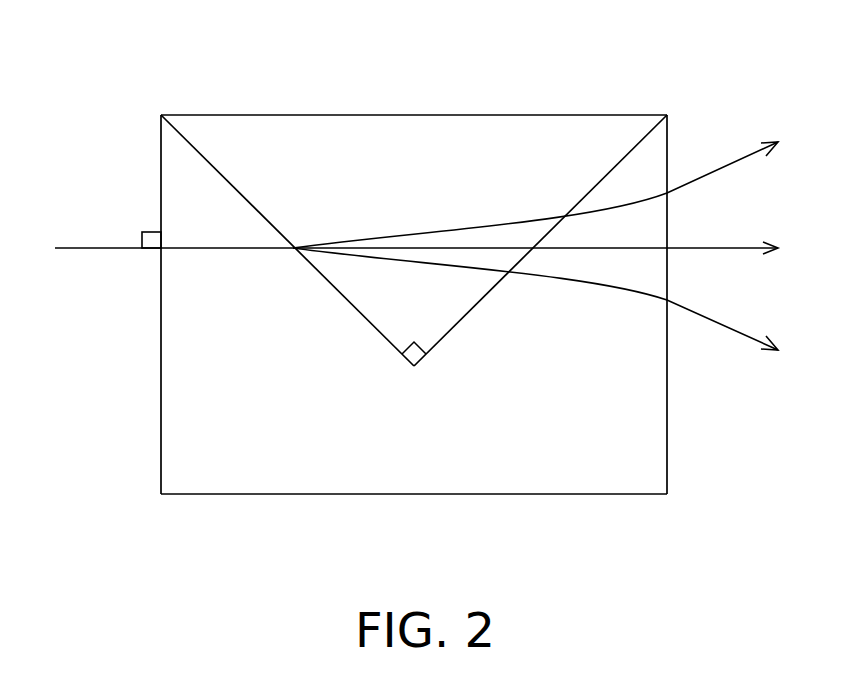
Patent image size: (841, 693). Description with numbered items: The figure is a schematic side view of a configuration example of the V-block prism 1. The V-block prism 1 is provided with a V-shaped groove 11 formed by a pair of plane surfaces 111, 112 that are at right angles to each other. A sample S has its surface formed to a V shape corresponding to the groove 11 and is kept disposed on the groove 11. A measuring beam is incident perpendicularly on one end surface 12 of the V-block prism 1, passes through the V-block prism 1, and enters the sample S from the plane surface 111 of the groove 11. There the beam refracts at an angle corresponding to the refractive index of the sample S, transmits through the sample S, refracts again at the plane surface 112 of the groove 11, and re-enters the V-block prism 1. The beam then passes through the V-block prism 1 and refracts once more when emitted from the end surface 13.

The V-block prism 1 is at (415, 291).
The V-shaped groove 11 is at (414, 197).
The plane surface 111 is at (183, 137).
The plane surface 112 is at (638, 140).
The end surface 12 is at (160, 358).
The end surface 13 is at (668, 408).
The sample S is at (400, 132).